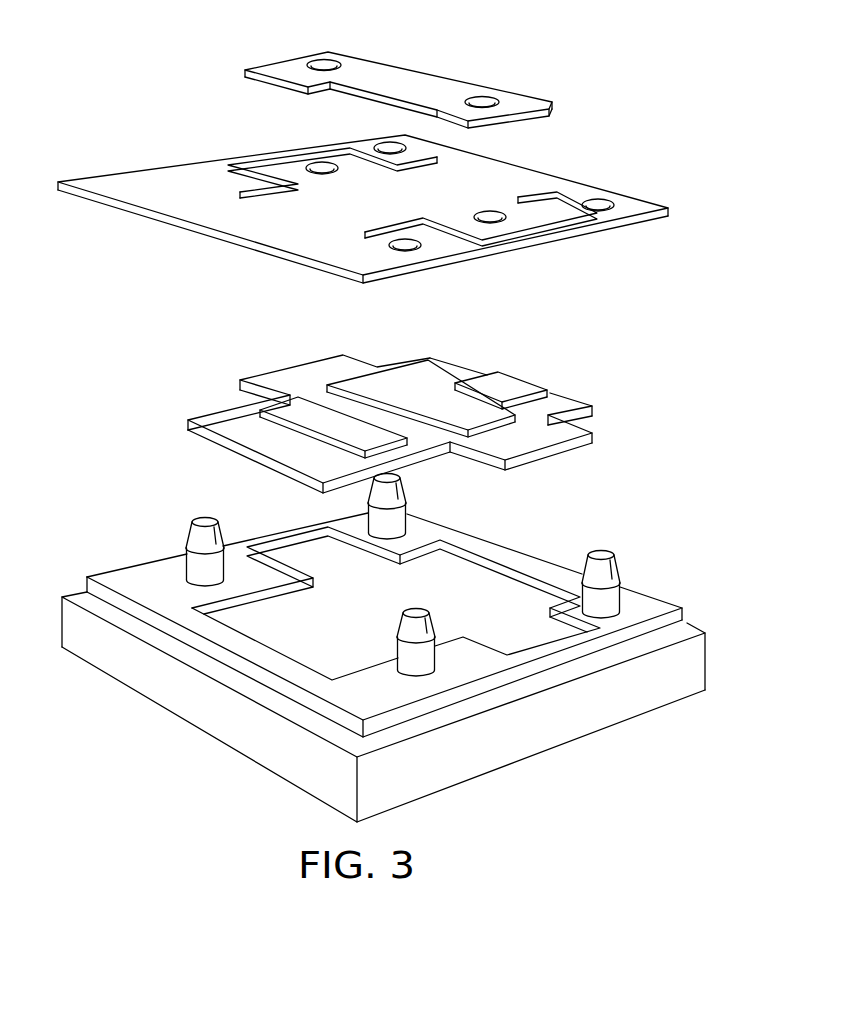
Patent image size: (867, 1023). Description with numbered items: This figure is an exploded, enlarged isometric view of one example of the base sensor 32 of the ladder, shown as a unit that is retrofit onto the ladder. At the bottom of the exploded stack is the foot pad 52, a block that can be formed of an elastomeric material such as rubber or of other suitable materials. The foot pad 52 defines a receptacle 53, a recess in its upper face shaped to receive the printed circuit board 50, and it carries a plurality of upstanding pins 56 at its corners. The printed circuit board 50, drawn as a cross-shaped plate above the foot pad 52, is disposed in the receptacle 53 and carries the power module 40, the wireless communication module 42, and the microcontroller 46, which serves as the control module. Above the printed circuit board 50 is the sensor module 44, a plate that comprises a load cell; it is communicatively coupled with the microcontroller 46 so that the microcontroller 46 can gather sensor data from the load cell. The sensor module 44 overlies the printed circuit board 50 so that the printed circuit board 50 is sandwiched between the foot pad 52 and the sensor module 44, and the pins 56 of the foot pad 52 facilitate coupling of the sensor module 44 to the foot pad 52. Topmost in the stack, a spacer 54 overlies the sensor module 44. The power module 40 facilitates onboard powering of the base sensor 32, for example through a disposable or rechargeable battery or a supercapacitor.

The base sensor 32 is at (86, 104).
The power module 40 is at (423, 396).
The wireless communication module 42 is at (306, 410).
The sensor module 44 is at (217, 163).
The microcontroller 46 is at (513, 385).
The printed circuit board 50 is at (592, 438).
The foot pad 52 is at (532, 755).
The receptacle 53 is at (282, 622).
The spacer 54 is at (443, 78).
The pins 56 is at (185, 536).